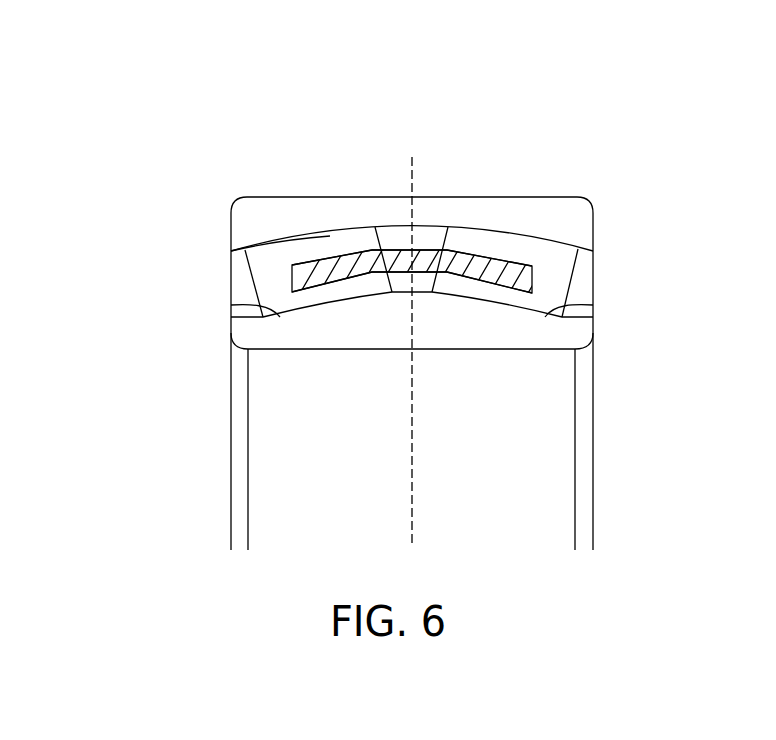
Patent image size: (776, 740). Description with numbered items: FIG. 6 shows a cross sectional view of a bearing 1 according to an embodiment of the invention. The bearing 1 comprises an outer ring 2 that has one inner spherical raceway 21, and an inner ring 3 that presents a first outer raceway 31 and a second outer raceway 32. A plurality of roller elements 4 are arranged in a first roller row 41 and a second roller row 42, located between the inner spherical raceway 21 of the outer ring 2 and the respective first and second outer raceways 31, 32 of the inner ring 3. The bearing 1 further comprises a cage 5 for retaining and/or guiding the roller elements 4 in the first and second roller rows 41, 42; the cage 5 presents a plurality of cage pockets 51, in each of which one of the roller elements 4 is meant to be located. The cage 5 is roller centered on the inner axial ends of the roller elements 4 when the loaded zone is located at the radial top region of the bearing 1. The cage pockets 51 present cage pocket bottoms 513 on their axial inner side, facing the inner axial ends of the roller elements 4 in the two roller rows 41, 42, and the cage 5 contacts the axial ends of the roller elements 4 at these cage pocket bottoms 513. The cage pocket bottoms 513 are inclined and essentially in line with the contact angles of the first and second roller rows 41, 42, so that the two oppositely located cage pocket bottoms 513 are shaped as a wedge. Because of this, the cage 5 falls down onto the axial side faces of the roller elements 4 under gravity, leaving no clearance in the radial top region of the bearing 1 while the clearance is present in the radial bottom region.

The bearing 1 is at (556, 128).
The outer ring 2 is at (591, 197).
The inner ring 3 is at (594, 349).
The roller elements 4 is at (412, 282).
The first roller row 41 is at (250, 280).
The second roller row 42 is at (575, 278).
The first outer raceway 31 is at (229, 305).
The second outer raceway 32 is at (595, 304).
The inner spherical raceway 21 is at (266, 252).
The cage 5 is at (493, 275).
The cage pockets 51 is at (331, 259).
The cage pocket bottoms 513 is at (393, 257).